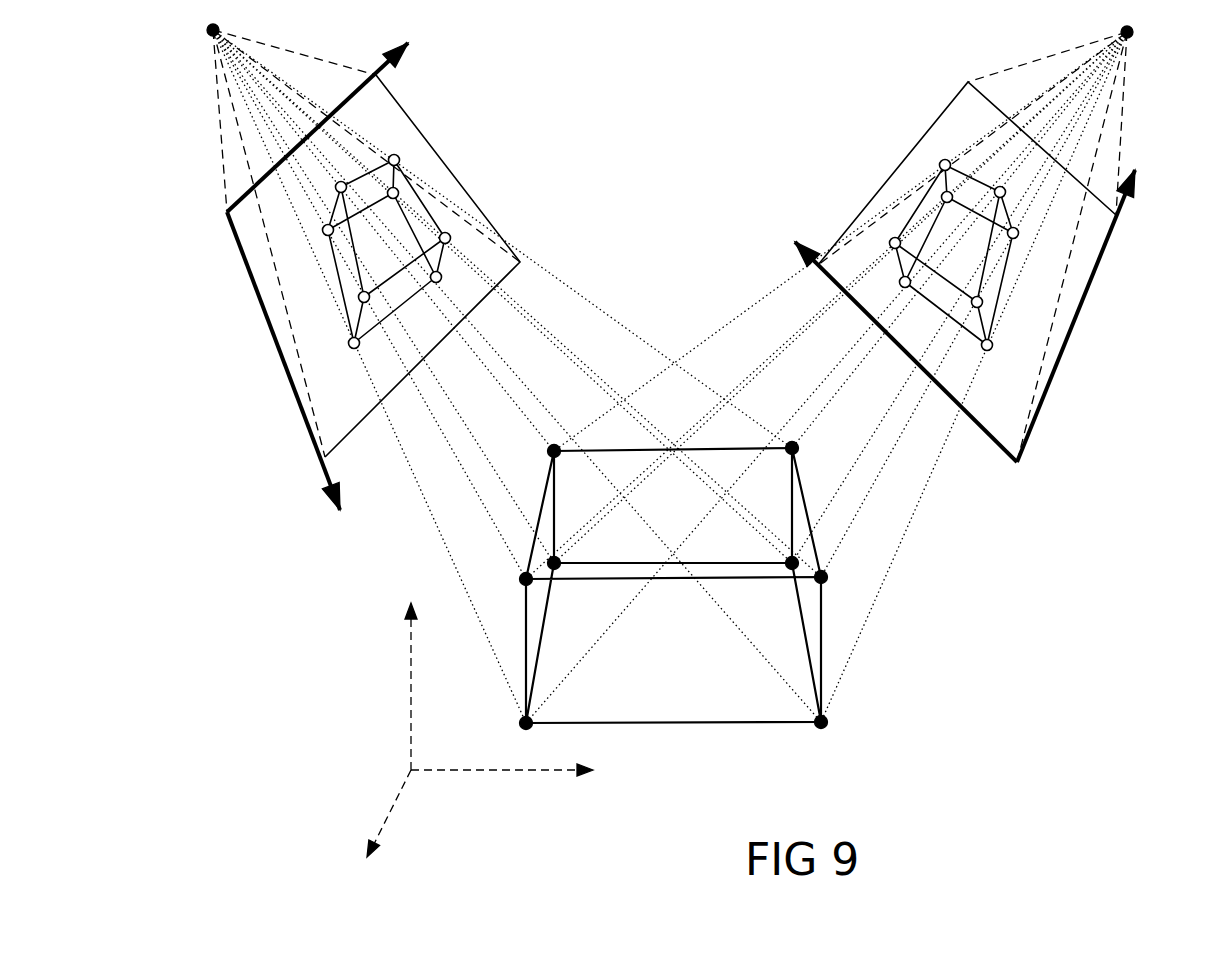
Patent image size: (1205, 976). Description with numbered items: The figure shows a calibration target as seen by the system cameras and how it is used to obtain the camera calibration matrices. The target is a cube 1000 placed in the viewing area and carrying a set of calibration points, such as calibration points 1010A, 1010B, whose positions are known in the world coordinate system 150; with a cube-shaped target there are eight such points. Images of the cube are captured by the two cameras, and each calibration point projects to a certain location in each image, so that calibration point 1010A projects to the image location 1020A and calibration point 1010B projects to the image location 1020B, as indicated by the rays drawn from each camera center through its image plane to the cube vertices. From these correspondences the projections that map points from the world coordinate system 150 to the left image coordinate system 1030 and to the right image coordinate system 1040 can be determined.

The world coordinate system 150 is at (320, 822).
The calibration target cube 1000 is at (778, 618).
The calibration point 1010A is at (821, 722).
The calibration point 1010B is at (821, 577).
The projected calibration point location 1020A is at (990, 347).
The projected calibration point location 1020B is at (983, 302).
The left image coordinate system 1030 is at (476, 128).
The right image coordinate system 1040 is at (988, 244).